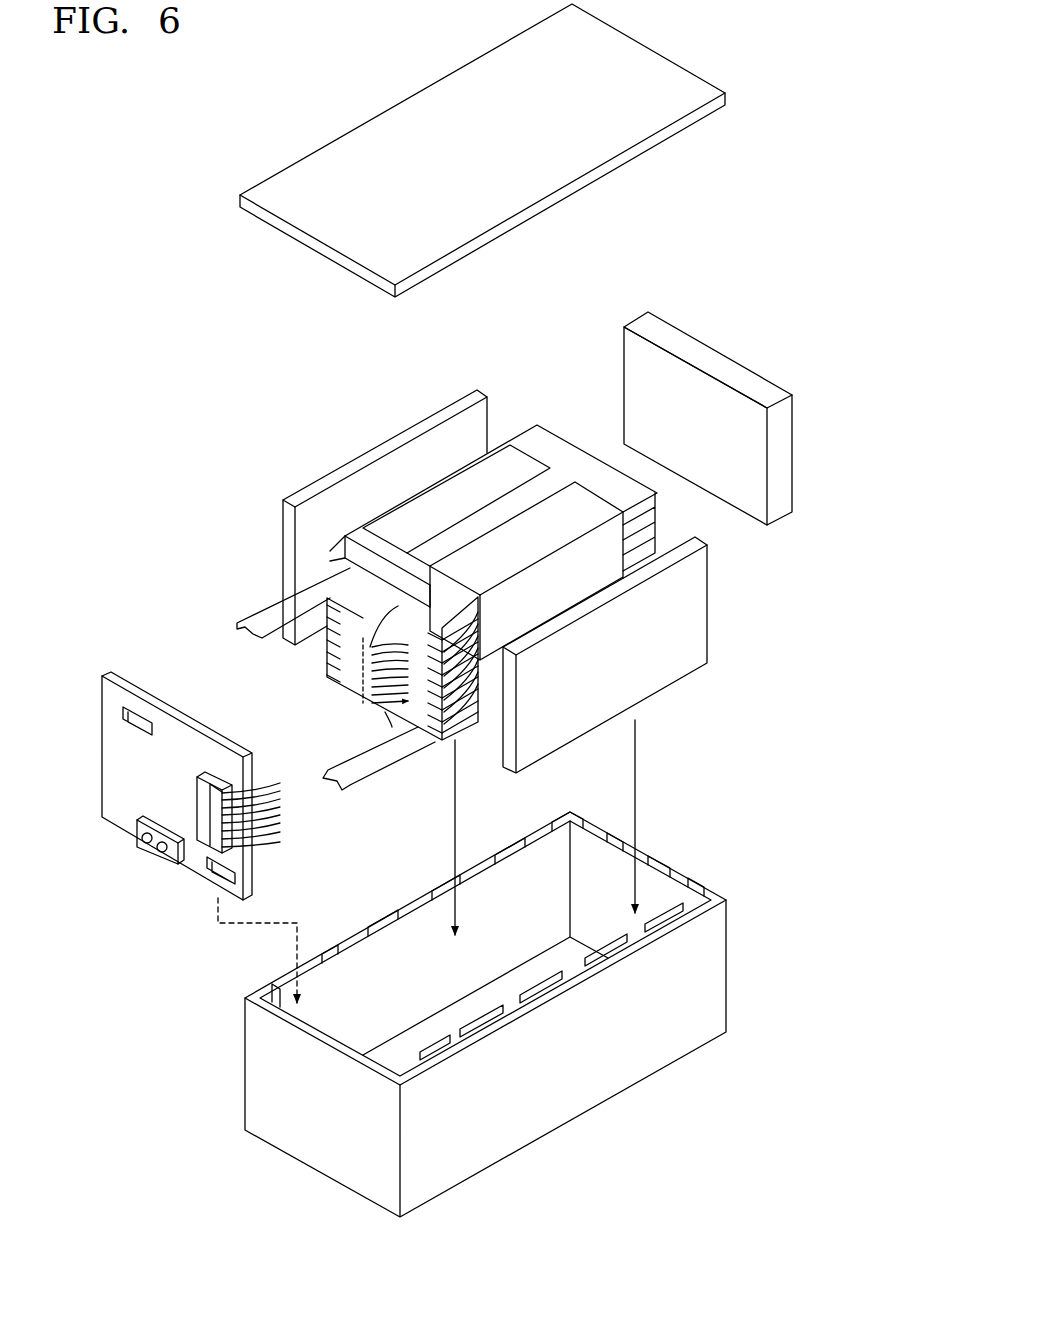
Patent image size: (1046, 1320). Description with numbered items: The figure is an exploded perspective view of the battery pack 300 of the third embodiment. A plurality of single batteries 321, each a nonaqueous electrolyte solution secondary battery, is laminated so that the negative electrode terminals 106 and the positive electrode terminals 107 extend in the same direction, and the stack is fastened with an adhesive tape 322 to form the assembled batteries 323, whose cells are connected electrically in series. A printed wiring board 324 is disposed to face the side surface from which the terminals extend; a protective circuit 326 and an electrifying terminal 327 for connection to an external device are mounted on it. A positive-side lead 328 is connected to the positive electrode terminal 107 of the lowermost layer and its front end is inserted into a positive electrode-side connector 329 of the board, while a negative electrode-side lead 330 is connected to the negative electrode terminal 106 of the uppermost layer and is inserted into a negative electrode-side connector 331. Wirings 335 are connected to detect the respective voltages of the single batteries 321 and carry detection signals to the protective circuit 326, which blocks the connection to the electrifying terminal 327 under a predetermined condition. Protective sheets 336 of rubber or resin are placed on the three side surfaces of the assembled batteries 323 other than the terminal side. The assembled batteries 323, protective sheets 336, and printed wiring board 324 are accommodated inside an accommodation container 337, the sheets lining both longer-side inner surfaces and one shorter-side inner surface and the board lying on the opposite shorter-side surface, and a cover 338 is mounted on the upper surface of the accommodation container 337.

The battery pack 300 is at (188, 332).
The cover 338 is at (668, 82).
The protective sheets 336 is at (350, 470).
The assembled batteries 323 is at (442, 490).
The adhesive tape 322 is at (565, 512).
The single battery 321 is at (660, 510).
The negative electrode-side lead 330 is at (257, 612).
The negative electrode terminal 106 is at (347, 565).
The positive electrode terminal 107 is at (430, 583).
The wirings 335 is at (363, 673).
The positive-side lead 328 is at (372, 762).
The printed wiring board 324 is at (137, 672).
The negative electrode-side connector 331 is at (145, 720).
The protective circuit 326 is at (215, 770).
The electrifying terminal 327 is at (152, 862).
The positive electrode-side connector 329 is at (233, 877).
The accommodation container 337 is at (707, 970).